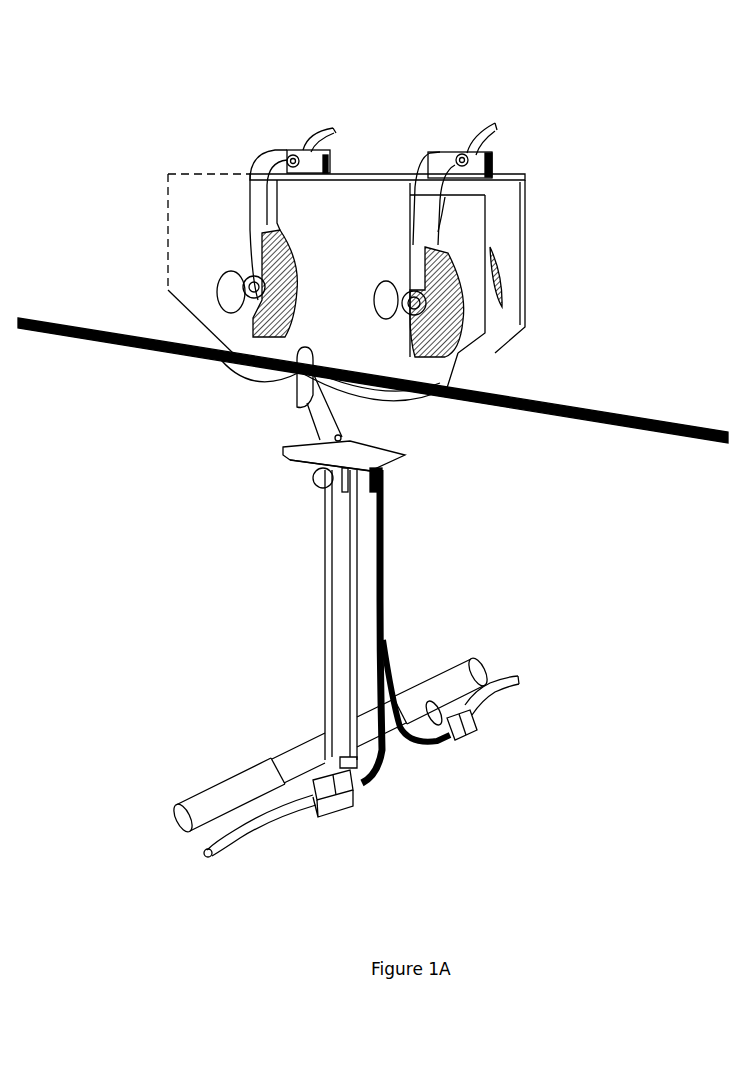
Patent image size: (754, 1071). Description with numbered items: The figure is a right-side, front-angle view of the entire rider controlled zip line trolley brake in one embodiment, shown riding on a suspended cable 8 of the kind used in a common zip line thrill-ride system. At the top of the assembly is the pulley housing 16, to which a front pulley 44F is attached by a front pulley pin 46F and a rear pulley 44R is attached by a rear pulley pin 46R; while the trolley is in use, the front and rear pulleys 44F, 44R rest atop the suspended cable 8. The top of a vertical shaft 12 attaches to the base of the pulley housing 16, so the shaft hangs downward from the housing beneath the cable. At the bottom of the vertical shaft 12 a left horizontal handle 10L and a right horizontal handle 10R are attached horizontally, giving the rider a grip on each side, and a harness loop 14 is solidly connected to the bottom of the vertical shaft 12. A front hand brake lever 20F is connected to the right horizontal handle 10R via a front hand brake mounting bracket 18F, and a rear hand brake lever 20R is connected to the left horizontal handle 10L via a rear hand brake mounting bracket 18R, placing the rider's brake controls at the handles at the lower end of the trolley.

The suspended cable 8 is at (647, 420).
The pulley housing 16 is at (197, 218).
The rear pulley 44R is at (235, 370).
The front pulley 44F is at (423, 403).
The rear pulley pin 46R is at (217, 288).
The front pulley pin 46F is at (377, 283).
The vertical shaft 12 is at (323, 607).
The harness loop 14 is at (357, 767).
The right horizontal handle 10R is at (208, 783).
The left horizontal handle 10L is at (463, 660).
The front hand brake mounting bracket 18F is at (280, 747).
The rear hand brake mounting bracket 18R is at (440, 660).
The front hand brake lever 20F is at (200, 847).
The rear hand brake lever 20R is at (518, 675).